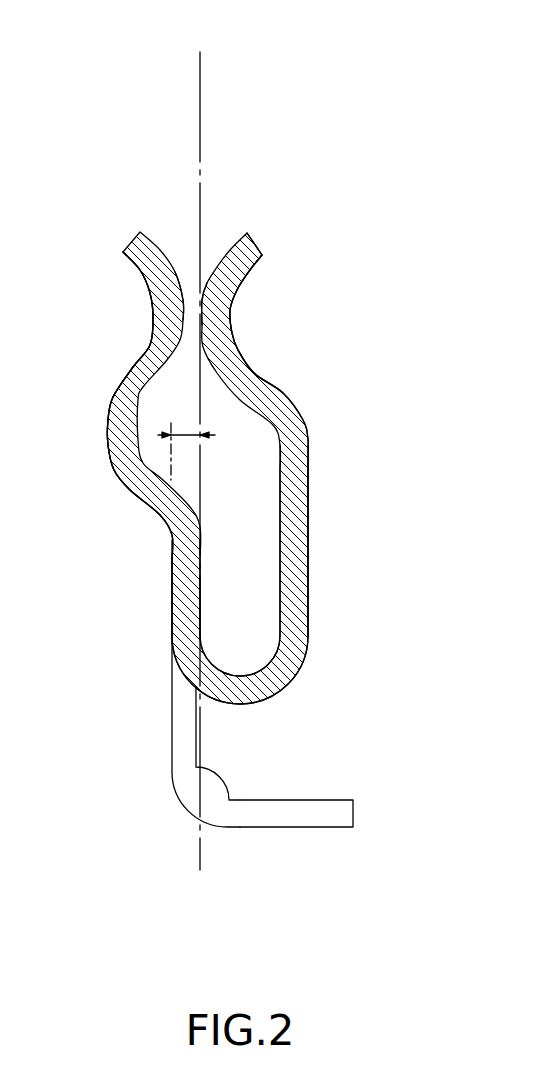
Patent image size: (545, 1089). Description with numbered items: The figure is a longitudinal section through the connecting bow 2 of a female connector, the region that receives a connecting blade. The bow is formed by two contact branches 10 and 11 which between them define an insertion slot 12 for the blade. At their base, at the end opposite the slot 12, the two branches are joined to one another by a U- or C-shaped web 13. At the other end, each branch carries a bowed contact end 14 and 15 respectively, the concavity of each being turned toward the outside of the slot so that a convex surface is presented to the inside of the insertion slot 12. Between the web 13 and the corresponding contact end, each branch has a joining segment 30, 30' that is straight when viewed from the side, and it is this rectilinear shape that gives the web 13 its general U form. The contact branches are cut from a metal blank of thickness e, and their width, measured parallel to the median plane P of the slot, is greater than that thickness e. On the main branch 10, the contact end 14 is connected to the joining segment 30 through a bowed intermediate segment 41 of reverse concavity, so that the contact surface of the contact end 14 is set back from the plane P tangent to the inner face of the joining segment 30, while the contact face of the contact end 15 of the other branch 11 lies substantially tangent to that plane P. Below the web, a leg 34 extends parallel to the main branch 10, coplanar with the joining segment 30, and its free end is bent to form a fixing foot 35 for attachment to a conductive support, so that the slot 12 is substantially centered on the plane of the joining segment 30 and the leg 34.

The connecting bow 2 is at (458, 693).
The first contact branch 10 is at (125, 207).
The second contact branch 11 is at (265, 205).
The insertion slot 12 is at (188, 265).
The web 13 is at (243, 707).
The contact end of first branch 14 is at (90, 222).
The contact end of second branch 15 is at (332, 233).
The joining segment of first branch 30 is at (136, 600).
The joining segment of second branch 30' is at (361, 527).
The leg 34 is at (183, 725).
The fixing foot 35 is at (272, 813).
The bowed intermediate segment 41 is at (58, 393).
The median plane P is at (200, 63).
The thickness of metal blank e is at (186, 445).